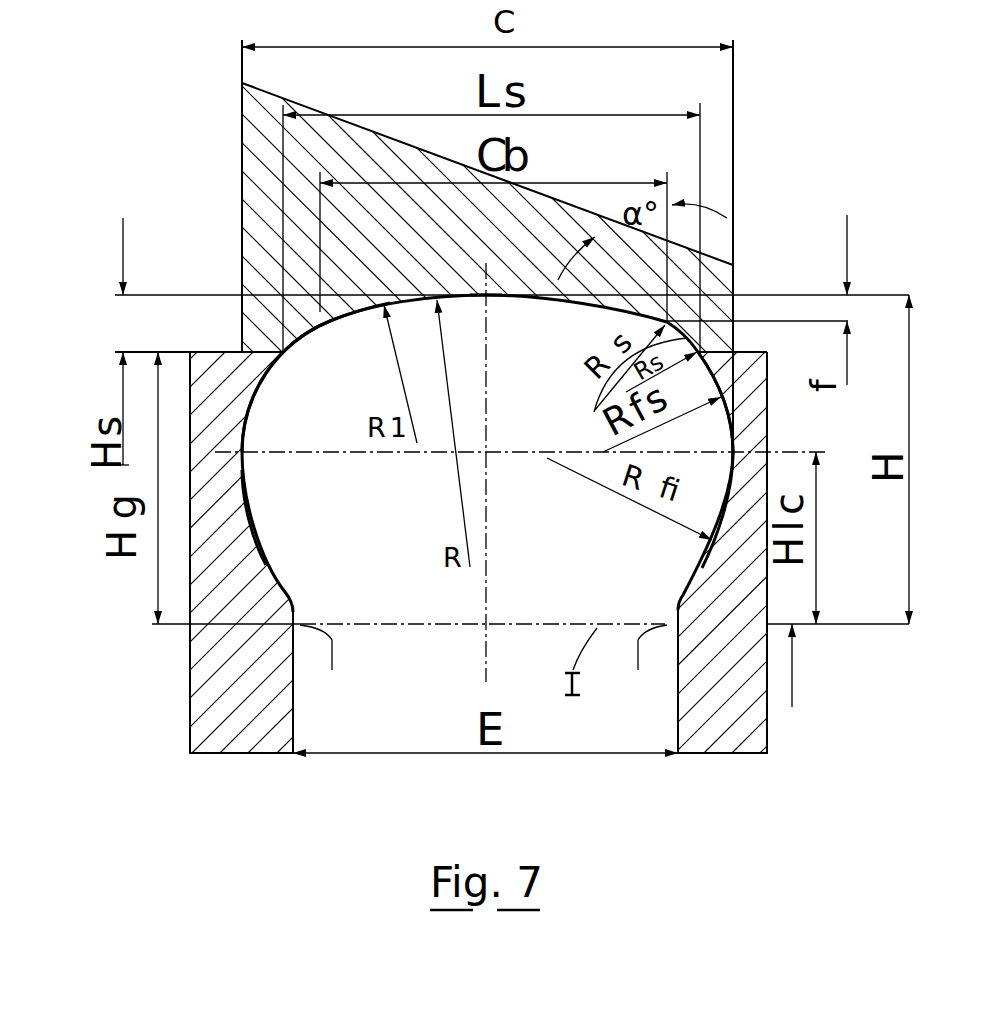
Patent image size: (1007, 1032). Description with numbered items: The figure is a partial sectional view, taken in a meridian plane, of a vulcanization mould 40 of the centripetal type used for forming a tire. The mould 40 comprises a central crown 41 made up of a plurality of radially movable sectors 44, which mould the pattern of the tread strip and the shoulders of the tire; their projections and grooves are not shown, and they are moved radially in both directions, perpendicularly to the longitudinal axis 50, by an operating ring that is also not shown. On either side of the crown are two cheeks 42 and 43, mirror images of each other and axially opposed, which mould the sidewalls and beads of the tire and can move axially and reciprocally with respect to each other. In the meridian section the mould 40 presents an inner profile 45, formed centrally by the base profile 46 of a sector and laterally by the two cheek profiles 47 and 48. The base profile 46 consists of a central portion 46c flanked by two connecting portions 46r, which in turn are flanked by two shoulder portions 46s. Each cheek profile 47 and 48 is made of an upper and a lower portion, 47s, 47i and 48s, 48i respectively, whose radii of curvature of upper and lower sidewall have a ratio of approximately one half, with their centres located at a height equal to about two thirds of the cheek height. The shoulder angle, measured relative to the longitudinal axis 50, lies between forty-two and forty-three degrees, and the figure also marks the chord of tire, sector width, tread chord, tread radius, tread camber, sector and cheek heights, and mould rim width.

The vulcanization mould 40 is at (743, 290).
The central crown 41 is at (240, 268).
The cheek 42 is at (200, 708).
The cheek 43 is at (733, 737).
The radially movable sector 44 is at (258, 178).
The inner profile 45 is at (560, 310).
The base profile 46 is at (466, 302).
The central portion 46c is at (517, 300).
The connecting portion 46r is at (363, 307).
The shoulder portion 46s is at (287, 350).
The cheek profile 47 is at (248, 508).
The upper portion of cheek profile 47s is at (247, 412).
The lower portion of cheek profile 47i is at (260, 547).
The cheek profile 48 is at (712, 548).
The upper portion of cheek profile 48s is at (724, 412).
The lower portion of cheek profile 48i is at (722, 510).
The longitudinal axis 50 is at (488, 610).